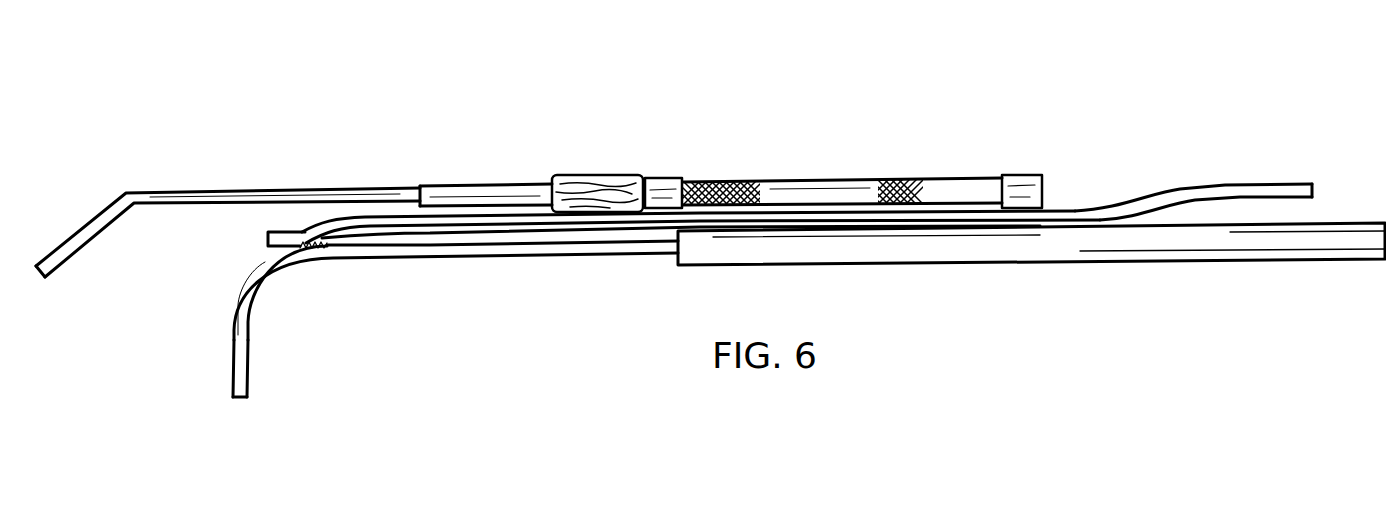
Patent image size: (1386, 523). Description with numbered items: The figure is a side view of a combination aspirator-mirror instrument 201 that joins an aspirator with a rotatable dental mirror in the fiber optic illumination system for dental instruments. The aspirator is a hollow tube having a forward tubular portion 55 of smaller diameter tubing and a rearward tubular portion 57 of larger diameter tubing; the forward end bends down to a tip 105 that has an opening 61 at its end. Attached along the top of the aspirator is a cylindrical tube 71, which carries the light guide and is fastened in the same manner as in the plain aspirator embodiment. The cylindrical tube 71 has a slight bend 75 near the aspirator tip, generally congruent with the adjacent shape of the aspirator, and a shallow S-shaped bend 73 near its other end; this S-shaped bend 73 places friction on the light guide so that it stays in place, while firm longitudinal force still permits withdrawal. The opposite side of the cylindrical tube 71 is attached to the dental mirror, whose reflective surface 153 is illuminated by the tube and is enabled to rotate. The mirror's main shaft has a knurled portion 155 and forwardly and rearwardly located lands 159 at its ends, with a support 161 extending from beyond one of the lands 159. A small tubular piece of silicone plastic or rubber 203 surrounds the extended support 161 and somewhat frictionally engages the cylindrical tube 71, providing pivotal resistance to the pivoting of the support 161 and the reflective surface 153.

The combination aspirator-mirror instrument 201 is at (517, 167).
The reflective surface 153 is at (90, 238).
The support 161 is at (470, 190).
The small tubular piece of silicone plastic or rubber 203 is at (623, 176).
The lands 159 is at (670, 180).
The knurled portion 155 is at (889, 181).
The slight bend 75 is at (310, 235).
The cylindrical tube 71 is at (1064, 211).
The s shaped bend 73 is at (1184, 192).
The forward tubular portion 55 is at (484, 244).
The rearward tubular portion 57 is at (880, 256).
The tip 105 is at (253, 320).
The opening 61 is at (242, 400).